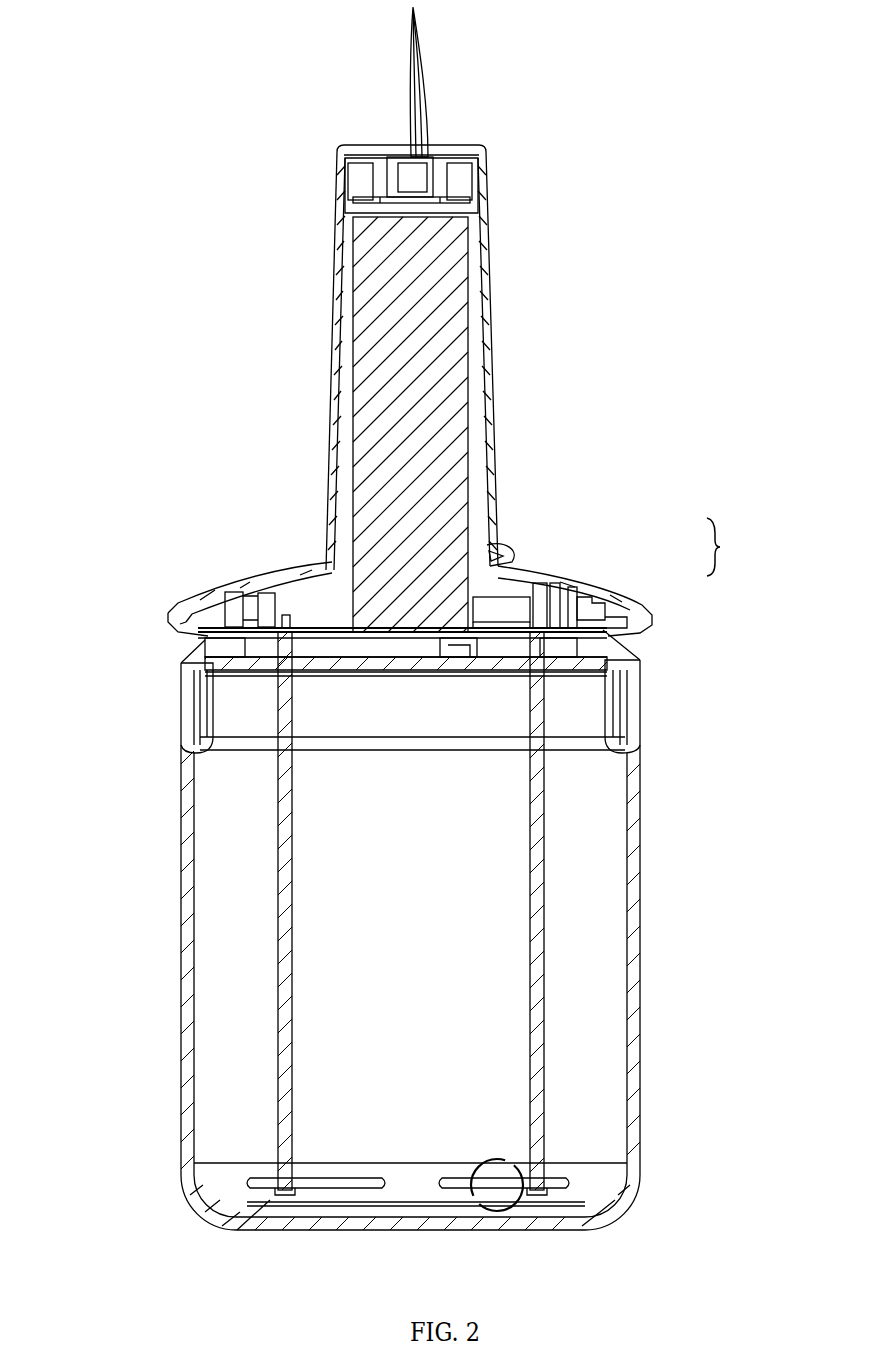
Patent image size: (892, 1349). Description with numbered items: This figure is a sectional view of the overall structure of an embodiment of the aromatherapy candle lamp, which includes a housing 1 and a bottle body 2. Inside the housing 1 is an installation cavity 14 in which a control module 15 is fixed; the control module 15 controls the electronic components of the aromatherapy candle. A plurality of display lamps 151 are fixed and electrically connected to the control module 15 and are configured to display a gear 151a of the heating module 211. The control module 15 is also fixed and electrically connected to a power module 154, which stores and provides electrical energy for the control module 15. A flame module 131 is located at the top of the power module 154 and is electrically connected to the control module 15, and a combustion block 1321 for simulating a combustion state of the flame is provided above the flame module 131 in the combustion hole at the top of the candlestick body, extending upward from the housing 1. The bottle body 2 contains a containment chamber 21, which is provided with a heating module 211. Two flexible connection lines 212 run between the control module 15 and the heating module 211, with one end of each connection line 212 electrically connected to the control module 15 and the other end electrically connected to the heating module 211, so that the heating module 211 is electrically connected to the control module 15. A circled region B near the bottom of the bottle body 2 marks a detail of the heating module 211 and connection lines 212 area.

The housing 1 is at (200, 600).
The bottle body 2 is at (182, 915).
The installation cavity 14 is at (305, 603).
The control module 15 is at (506, 625).
The containment chamber 21 is at (212, 860).
The flame module 131 is at (455, 205).
The display lamp 151 is at (545, 598).
The gear 151a is at (753, 547).
The power module 154 is at (490, 545).
The heating module 211 is at (285, 1188).
The connection line 212 is at (278, 1030).
The combustion block 1321 is at (430, 100).
The detail B is at (518, 1205).